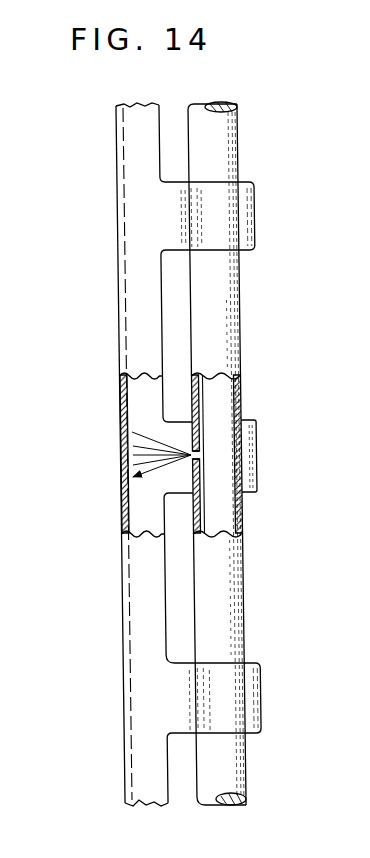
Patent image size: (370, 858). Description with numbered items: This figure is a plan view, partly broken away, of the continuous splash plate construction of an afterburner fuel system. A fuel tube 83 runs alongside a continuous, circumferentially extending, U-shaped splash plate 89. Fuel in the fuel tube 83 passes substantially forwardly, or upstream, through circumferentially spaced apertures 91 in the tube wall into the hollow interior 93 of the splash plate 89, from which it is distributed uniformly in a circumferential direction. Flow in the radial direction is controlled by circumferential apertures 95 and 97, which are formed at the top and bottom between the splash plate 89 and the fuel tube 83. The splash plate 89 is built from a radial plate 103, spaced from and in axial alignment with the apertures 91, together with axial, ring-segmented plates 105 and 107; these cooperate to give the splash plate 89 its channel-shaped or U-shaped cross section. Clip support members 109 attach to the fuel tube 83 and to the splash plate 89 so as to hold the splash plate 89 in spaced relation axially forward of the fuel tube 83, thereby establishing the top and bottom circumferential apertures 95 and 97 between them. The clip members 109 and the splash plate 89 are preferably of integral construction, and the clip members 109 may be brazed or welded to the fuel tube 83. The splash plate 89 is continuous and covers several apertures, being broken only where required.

The fuel tube 83 is at (225, 293).
The splash plate 89 is at (118, 607).
The apertures 91 is at (200, 455).
The hollow interior 93 is at (138, 392).
The circumferential aperture 95 is at (180, 632).
The circumferential aperture 97 is at (178, 273).
The radial plate 103 is at (125, 427).
The axial ring-segmented plate 105 is at (140, 553).
The axial ring-segmented plate 107 is at (140, 493).
The clip support members 109 is at (222, 198).